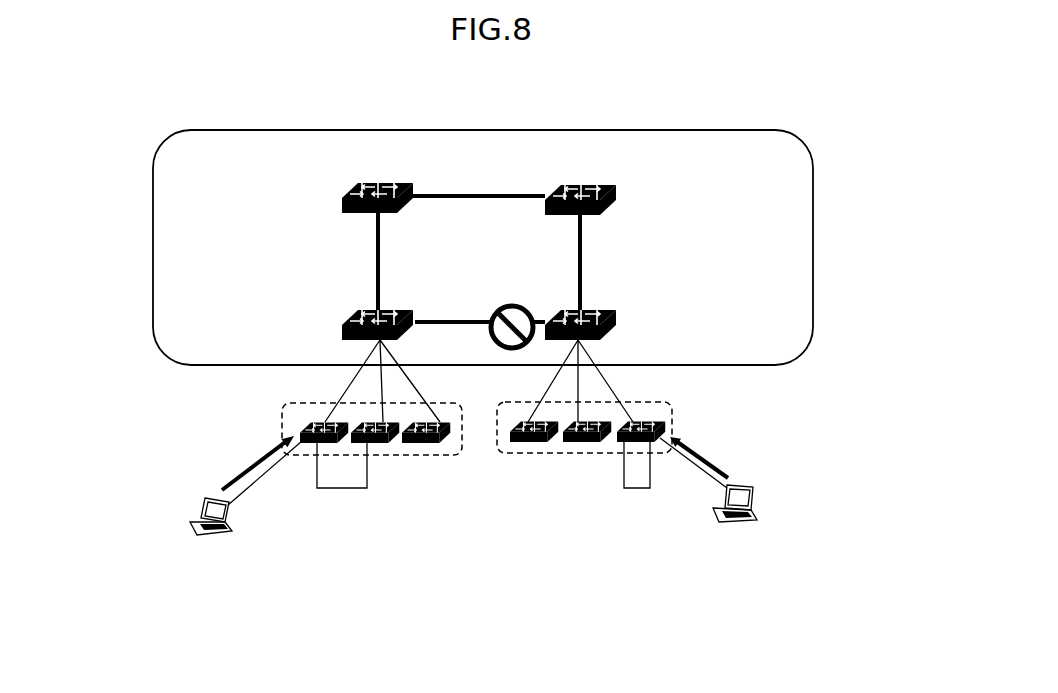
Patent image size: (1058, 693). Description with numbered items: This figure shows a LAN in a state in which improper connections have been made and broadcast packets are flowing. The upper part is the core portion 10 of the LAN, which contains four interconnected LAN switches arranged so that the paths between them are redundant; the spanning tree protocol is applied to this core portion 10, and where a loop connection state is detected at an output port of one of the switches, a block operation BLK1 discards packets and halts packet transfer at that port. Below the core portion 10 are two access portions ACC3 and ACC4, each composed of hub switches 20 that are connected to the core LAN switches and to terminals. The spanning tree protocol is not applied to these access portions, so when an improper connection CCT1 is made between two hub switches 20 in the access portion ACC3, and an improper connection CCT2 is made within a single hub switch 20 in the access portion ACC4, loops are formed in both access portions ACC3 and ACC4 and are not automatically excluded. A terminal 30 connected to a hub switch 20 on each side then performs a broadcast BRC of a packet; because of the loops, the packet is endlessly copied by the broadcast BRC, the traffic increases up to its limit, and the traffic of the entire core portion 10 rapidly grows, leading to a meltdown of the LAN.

The core portion 10 is at (218, 127).
The hub switch 20 is at (296, 437).
The terminal 30 is at (200, 537).
The block operation BLK1 is at (501, 303).
The access portion ACC3 is at (284, 404).
The access portion ACC4 is at (632, 400).
The improper connection CCT1 is at (345, 488).
The improper connection CCT2 is at (633, 488).
The broadcast BRC is at (742, 452).